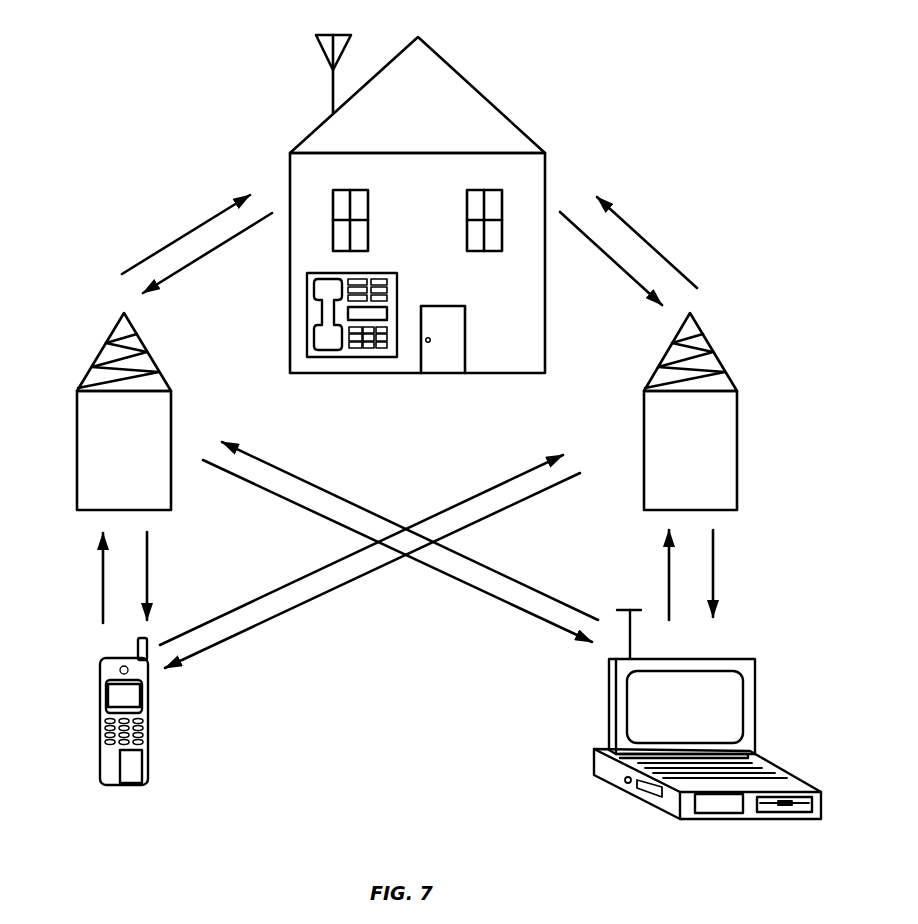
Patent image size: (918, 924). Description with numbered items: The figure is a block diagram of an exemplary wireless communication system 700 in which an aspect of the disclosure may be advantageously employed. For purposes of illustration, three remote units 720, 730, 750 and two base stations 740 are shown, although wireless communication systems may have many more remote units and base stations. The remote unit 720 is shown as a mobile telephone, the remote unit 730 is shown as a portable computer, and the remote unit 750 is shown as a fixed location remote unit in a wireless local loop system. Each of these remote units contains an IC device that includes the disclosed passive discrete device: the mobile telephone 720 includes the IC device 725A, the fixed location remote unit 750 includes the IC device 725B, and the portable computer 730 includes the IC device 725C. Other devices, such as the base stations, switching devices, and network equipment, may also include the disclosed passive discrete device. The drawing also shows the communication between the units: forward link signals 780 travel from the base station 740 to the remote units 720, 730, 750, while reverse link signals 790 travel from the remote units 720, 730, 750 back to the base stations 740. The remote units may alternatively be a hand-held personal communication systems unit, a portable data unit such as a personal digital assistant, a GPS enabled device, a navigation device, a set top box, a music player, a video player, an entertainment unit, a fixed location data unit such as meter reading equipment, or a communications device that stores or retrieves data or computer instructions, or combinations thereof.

The wireless communication system 700 is at (120, 48).
The remote unit 720 is at (100, 675).
The IC device 725A is at (114, 790).
The IC device 725B is at (377, 364).
The IC device 725C is at (710, 829).
The remote unit 730 is at (735, 655).
The base station 740 is at (100, 352).
The remote unit 750 is at (307, 324).
The forward link signals 780 is at (190, 232).
The reverse link signals 790 is at (197, 265).